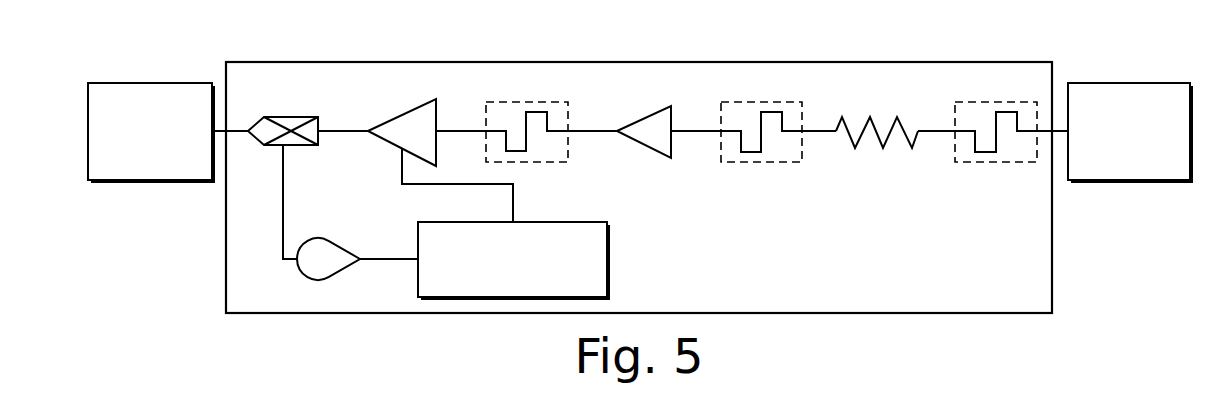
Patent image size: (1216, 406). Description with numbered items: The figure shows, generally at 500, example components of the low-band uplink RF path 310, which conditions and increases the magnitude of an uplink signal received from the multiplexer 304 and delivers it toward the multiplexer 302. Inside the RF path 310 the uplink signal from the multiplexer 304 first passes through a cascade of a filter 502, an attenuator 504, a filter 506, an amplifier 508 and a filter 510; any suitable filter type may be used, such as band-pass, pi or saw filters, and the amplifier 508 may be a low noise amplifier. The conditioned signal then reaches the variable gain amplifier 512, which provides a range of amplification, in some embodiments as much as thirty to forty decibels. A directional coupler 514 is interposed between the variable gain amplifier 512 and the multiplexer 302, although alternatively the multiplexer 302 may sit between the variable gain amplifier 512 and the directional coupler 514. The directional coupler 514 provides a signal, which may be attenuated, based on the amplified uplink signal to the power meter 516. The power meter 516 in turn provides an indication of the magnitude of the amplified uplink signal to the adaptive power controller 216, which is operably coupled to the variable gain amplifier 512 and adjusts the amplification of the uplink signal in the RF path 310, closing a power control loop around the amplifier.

The example components of RF path 500 is at (193, 33).
The multiplexer 302 is at (142, 83).
The multiplexer 304 is at (1095, 83).
The low-band uplink RF path 310 is at (317, 62).
The directional coupler 514 is at (300, 117).
The variable gain amplifier 512 is at (422, 100).
The filter 510 is at (506, 102).
The amplifier 508 is at (658, 110).
The filter 506 is at (743, 102).
The attenuator 504 is at (845, 117).
The filter 502 is at (1020, 102).
The power meter 516 is at (333, 274).
The adaptive power controller 216 is at (567, 222).